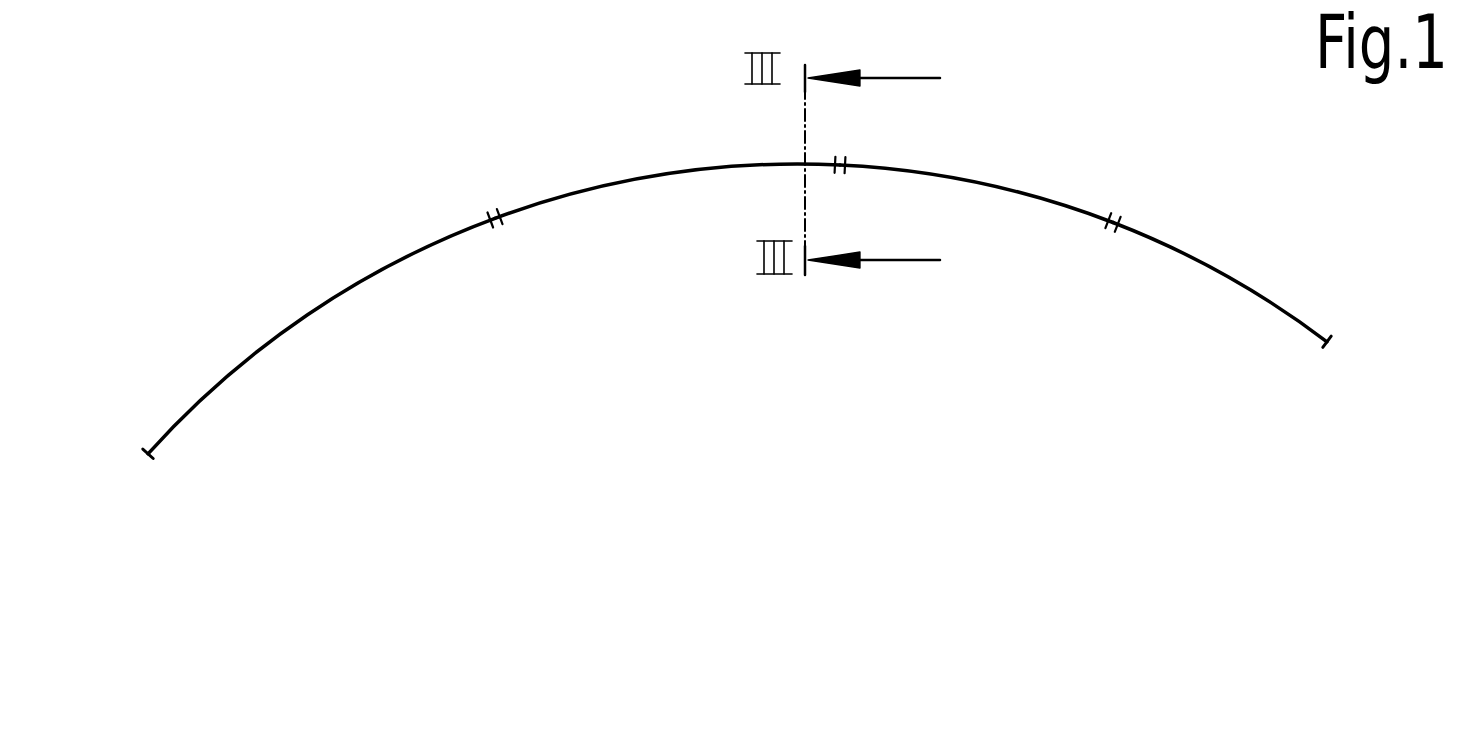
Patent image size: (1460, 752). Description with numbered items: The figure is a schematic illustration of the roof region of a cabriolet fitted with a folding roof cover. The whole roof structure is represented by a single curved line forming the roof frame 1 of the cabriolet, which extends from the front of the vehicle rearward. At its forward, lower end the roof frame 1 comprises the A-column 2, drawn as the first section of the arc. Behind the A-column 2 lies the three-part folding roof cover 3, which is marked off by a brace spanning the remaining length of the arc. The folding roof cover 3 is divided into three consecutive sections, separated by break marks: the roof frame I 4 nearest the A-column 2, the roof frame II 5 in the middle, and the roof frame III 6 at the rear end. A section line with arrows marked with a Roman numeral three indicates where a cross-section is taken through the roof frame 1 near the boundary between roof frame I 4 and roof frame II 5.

The roof frame 1 is at (983, 87).
The A-column 2 is at (303, 318).
The three-part folding roof cover 3 is at (1320, 372).
The roof frame I 4 is at (607, 186).
The roof frame II 5 is at (980, 183).
The roof frame III 6 is at (1203, 263).